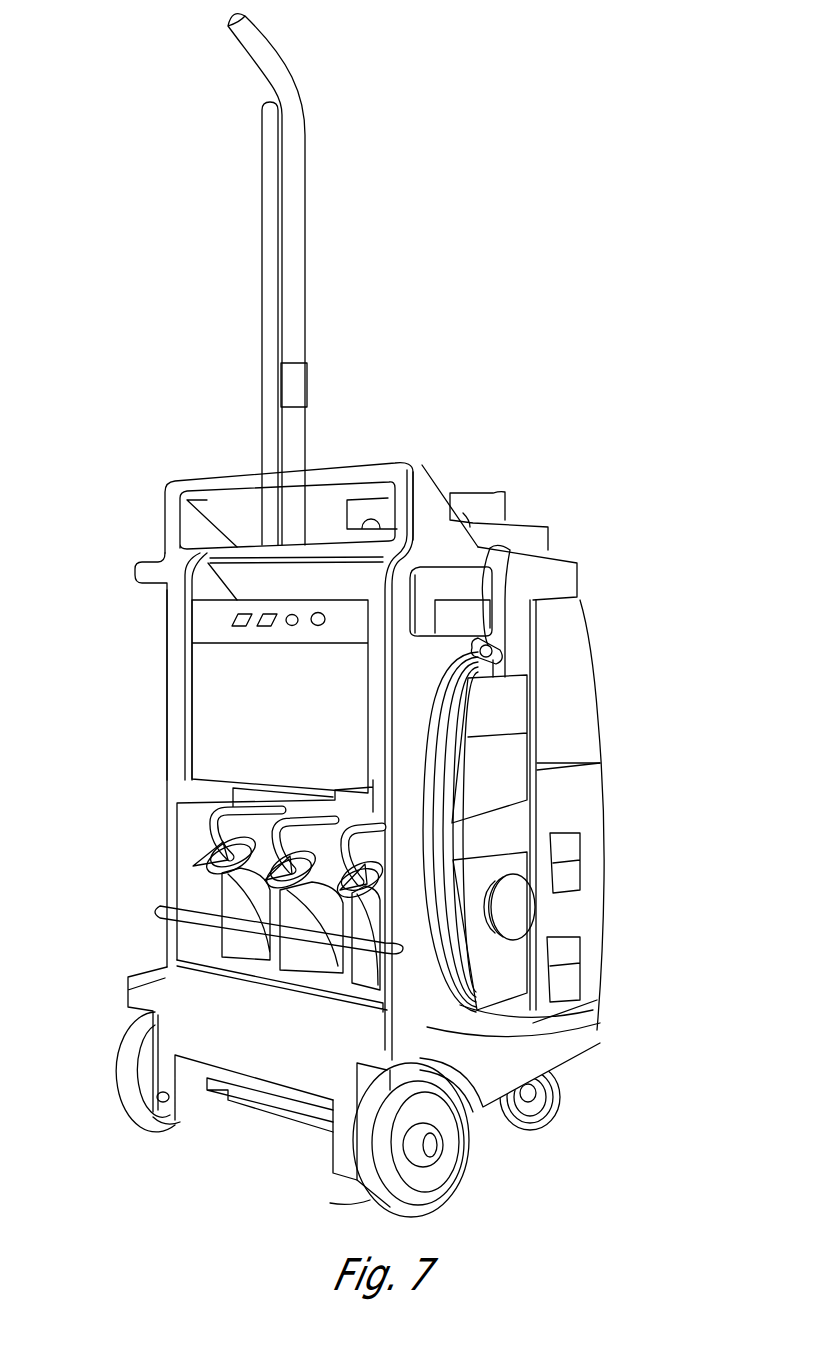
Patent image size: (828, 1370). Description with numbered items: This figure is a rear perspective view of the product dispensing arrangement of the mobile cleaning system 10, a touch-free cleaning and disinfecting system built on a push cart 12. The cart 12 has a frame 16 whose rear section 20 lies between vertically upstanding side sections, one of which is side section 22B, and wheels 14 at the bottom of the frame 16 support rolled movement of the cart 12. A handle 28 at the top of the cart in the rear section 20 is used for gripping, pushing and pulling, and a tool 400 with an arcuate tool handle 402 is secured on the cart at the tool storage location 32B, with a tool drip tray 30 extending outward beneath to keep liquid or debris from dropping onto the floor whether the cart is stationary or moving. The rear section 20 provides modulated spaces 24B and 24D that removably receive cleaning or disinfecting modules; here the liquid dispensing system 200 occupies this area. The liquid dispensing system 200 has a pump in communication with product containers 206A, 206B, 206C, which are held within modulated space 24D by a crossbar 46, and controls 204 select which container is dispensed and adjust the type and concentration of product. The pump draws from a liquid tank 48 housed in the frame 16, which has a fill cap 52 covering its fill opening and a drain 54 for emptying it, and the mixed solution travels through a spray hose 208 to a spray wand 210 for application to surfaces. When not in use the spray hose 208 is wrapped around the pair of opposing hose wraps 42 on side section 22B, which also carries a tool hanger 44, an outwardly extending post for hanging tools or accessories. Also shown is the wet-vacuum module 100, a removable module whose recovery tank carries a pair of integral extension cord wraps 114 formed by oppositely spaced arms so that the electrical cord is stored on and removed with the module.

The mobile cleaning system 10 is at (552, 493).
The cart 12 is at (137, 567).
The wheels 14 is at (132, 1044).
The frame 16 is at (193, 1101).
The rear section 20 is at (185, 792).
The side section 22B is at (520, 651).
The modulated space 24B is at (192, 630).
The modulated space 24D is at (195, 840).
The handle 28 is at (205, 482).
The tool drip tray 30 is at (128, 987).
The tool storage location 32B is at (596, 815).
The hose wraps 42 is at (515, 703).
The tool hanger 44 is at (535, 546).
The crossbar 46 is at (200, 917).
The liquid tank 48 is at (505, 1130).
The fill cap 52 is at (527, 909).
The drain 54 is at (158, 1097).
The wet-vacuum module 100 is at (603, 693).
The extension cord wraps 114 is at (572, 846).
The liquid dispensing system 200 is at (220, 695).
The controls 204 is at (232, 616).
The product container 206A is at (205, 880).
The product container 206B is at (270, 975).
The product container 206C is at (345, 1000).
The spray hose 208 is at (425, 766).
The spray wand 210 is at (495, 634).
The tool 400 is at (262, 180).
The tool handle 402 is at (262, 281).